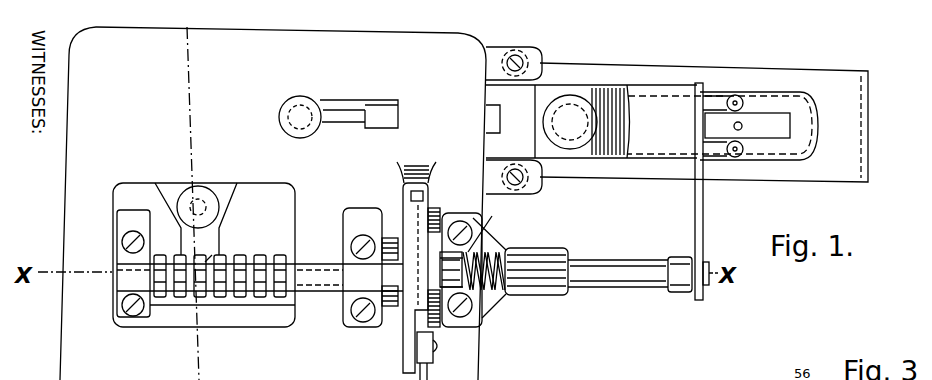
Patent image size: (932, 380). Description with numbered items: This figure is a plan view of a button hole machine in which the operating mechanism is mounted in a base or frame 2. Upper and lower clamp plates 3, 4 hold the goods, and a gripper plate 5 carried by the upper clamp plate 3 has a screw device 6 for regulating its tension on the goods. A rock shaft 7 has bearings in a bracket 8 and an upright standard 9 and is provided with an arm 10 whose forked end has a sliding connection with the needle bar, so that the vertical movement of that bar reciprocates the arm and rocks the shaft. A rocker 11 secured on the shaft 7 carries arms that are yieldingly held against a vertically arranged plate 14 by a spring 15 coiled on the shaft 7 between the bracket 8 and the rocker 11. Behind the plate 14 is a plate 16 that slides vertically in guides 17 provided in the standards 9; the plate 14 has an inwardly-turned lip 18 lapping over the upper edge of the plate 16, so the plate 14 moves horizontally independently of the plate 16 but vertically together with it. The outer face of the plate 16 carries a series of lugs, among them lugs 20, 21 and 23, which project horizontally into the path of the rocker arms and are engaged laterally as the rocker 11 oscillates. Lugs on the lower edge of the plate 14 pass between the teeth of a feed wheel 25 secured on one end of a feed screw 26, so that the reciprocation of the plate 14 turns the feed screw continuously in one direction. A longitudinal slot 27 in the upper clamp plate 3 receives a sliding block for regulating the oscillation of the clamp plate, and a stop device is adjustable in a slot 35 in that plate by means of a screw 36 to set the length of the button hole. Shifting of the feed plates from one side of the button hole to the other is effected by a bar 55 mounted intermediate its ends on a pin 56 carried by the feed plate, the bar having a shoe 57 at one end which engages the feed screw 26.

The base or frame 2 is at (486, 357).
The upper clamp plate 3 is at (228, 193).
The lower clamp plate 4 is at (848, 142).
The gripper plate 5 is at (760, 103).
The screw device 6 is at (582, 121).
The rock shaft 7 is at (607, 268).
The bracket 8 is at (540, 264).
The upright standard 9 is at (405, 372).
The arm 10 is at (704, 216).
The rocker 11 is at (480, 236).
The vertically arranged plate 14 is at (428, 214).
The spring 15 is at (492, 252).
The plate 16 is at (408, 345).
The guides 17 is at (403, 188).
The inwardly-turned lip 18 is at (410, 216).
The lug 20 is at (443, 263).
The lug 21 is at (442, 330).
The lug 23 is at (440, 213).
The feed wheel 25 is at (385, 330).
The feed screw 26 is at (246, 262).
The longitudinal slot 27 is at (385, 112).
The slot 35 is at (338, 118).
The screw 36 is at (302, 102).
The bar 55 is at (215, 242).
The pin 56 is at (184, 214).
The shoe 57 is at (212, 258).